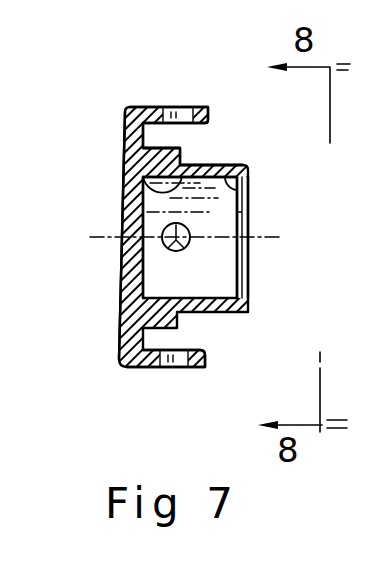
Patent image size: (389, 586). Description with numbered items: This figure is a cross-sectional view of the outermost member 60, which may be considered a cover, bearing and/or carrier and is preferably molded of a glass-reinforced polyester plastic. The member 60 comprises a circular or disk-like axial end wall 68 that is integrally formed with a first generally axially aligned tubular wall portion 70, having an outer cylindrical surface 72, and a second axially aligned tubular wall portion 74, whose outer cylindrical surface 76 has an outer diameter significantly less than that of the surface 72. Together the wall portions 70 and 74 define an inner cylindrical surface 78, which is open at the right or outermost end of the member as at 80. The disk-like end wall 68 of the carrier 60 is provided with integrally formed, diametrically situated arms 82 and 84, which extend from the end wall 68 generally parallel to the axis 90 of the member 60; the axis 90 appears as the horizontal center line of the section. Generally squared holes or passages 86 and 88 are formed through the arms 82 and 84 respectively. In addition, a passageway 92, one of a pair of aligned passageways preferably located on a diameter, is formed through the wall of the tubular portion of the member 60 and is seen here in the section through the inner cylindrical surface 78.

The outermost member 60 is at (83, 289).
The axial end wall 68 is at (135, 305).
The first tubular wall portion 70 is at (165, 163).
The outer cylindrical surface 72 is at (168, 148).
The second tubular wall portion 74 is at (232, 165).
The outer cylindrical surface 76 is at (213, 165).
The inner cylindrical surface 78 is at (152, 203).
The open end 80 is at (249, 188).
The arm 82 is at (200, 107).
The arm 84 is at (192, 368).
The squared hole 86 is at (178, 107).
The squared hole 88 is at (166, 368).
The axis 90 is at (283, 237).
The passageway 92 is at (183, 251).